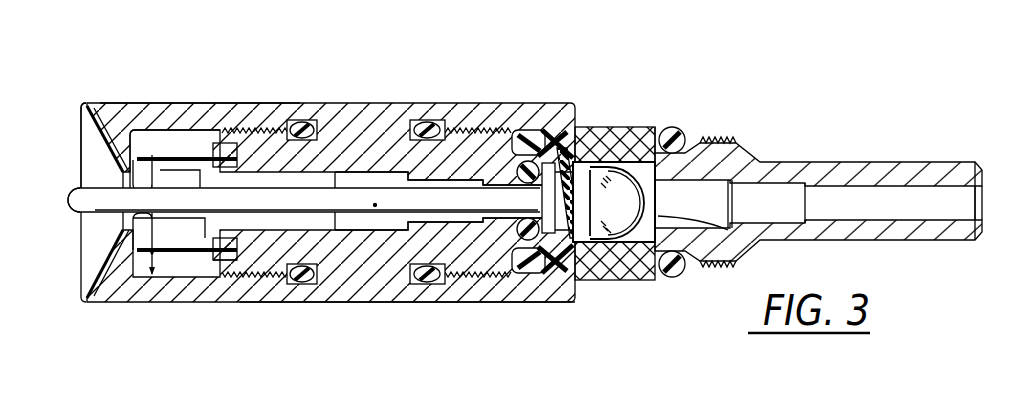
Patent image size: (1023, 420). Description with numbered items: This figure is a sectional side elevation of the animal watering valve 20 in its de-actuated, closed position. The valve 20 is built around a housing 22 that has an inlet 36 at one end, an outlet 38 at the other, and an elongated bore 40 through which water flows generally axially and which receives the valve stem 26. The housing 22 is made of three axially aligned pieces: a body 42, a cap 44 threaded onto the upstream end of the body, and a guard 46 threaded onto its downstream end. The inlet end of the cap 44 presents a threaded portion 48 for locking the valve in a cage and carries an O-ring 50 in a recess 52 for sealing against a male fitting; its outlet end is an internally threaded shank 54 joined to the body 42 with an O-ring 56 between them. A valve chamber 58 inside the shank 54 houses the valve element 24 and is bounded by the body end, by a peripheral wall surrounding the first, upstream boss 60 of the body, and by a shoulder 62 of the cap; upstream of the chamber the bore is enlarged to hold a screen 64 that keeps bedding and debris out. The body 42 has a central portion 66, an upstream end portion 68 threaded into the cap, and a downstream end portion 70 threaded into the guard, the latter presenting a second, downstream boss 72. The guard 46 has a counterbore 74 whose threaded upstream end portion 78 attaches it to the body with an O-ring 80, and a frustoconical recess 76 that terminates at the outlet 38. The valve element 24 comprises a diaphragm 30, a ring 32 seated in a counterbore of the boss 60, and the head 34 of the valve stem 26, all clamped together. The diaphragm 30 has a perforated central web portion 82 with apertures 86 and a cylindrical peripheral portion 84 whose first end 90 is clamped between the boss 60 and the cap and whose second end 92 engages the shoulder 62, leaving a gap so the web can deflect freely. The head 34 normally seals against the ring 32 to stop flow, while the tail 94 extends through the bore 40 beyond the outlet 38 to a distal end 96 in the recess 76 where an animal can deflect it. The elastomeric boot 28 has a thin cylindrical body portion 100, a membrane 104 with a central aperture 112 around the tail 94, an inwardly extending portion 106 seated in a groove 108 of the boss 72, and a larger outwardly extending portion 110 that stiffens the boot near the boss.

The animal watering valve 20 is at (513, 193).
The housing 22 is at (285, 76).
The valve element 24 is at (580, 200).
The valve stem 26 is at (337, 186).
The elastomeric boot 28 is at (168, 155).
The diaphragm 30 is at (527, 283).
The ring 32 is at (457, 266).
The head 34 is at (537, 252).
The inlet 36 is at (972, 192).
The outlet 38 is at (125, 230).
The bore 40 is at (360, 233).
The body 42 is at (342, 98).
The cap 44 is at (815, 158).
The guard 46 is at (197, 100).
The threaded portion 48 is at (750, 143).
The O-ring 50 is at (690, 130).
The recess 52 is at (722, 136).
The shank 54 is at (448, 102).
The O-ring 56 is at (422, 128).
The valve chamber 58 is at (530, 137).
The first upstream boss 60 is at (555, 157).
The shoulder 62 is at (588, 281).
The screen 64 is at (753, 250).
The central portion 66 is at (332, 304).
The upstream end portion 68 is at (447, 280).
The downstream end portion 70 is at (240, 262).
The second downstream boss 72 is at (226, 148).
The counterbore 74 is at (170, 280).
The frustoconical recess 76 is at (90, 137).
The upstream end portion 78 is at (277, 272).
The O-ring 80 is at (305, 130).
The central web portion 82 is at (638, 127).
The cylindrical peripheral portion 84 is at (553, 250).
The apertures 86 is at (570, 266).
The first end 90 is at (503, 130).
The second end 92 is at (573, 158).
The tail 94 is at (375, 205).
The distal end 96 is at (80, 206).
The cylindrical body portion 100 is at (182, 254).
The membrane 104 is at (97, 103).
The inwardly extending portion 106 is at (211, 238).
The groove 108 is at (258, 140).
The outwardly extending portion 110 is at (228, 258).
The central aperture 112 is at (160, 158).